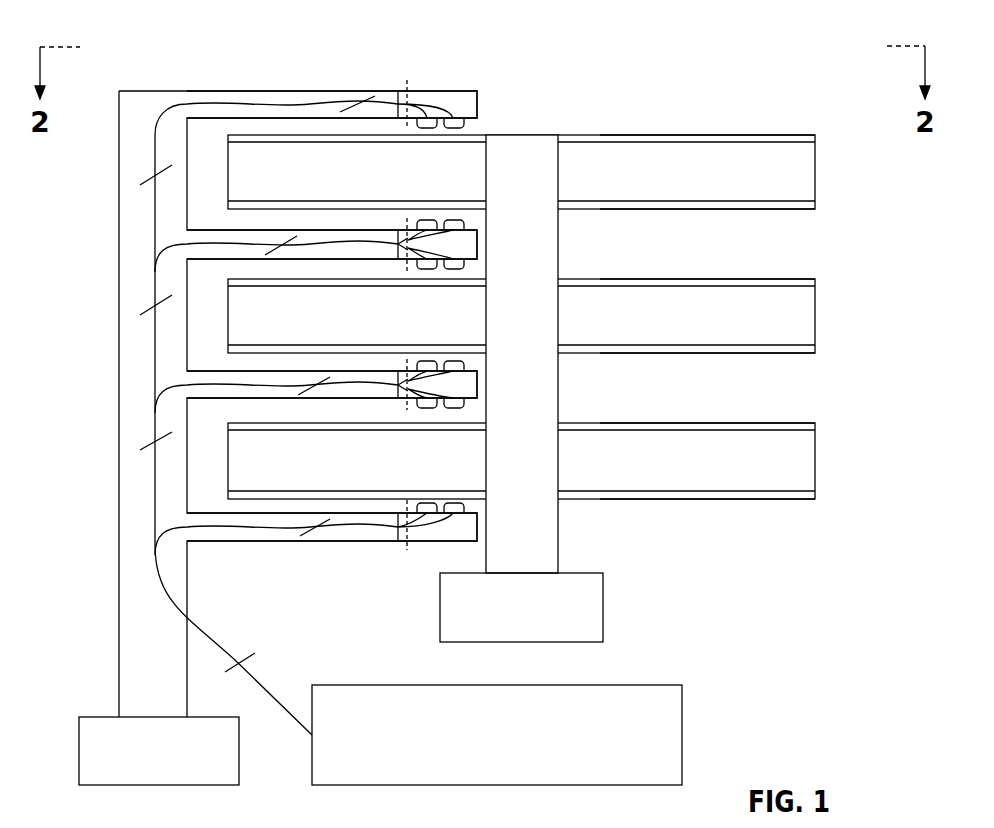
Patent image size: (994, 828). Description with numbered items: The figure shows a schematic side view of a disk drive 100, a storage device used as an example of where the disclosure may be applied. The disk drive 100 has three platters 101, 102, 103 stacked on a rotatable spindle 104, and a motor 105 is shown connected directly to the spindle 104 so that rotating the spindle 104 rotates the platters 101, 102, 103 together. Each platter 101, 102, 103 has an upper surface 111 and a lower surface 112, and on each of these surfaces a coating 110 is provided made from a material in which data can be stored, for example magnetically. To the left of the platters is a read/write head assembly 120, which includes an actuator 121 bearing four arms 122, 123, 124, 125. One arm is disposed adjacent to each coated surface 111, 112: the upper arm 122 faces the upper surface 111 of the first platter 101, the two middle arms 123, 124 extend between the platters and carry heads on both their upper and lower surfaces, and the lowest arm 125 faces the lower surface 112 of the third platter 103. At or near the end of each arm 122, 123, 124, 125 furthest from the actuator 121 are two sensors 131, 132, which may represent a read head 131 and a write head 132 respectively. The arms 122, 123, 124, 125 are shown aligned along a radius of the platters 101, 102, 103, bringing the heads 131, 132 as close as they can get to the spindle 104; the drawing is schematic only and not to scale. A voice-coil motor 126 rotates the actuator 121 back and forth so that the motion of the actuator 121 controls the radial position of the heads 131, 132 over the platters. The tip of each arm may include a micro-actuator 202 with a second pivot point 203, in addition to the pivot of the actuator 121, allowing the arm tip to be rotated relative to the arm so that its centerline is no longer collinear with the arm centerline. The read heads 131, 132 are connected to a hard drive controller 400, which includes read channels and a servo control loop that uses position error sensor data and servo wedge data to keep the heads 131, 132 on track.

The disk drive 100 is at (165, 53).
The platter 101 is at (815, 167).
The platter 102 is at (815, 312).
The platter 103 is at (815, 457).
The spindle 104 is at (530, 140).
The motor 105 is at (606, 607).
The coating 110 is at (815, 137).
The upper surface 111 is at (636, 134).
The lower surface 112 is at (636, 212).
The read/write head assembly 120 is at (110, 228).
The actuator 121 is at (118, 326).
The arm 122 is at (297, 91).
The arm 123 is at (313, 230).
The arm 124 is at (310, 371).
The arm 125 is at (312, 513).
The voice-coil motor 126 is at (118, 717).
The read head/sensor 131 is at (455, 128).
The write head 132 is at (427, 128).
The micro-actuator 202 is at (458, 99).
The second pivot point 203 is at (408, 101).
The hard drive controller 400 is at (381, 684).